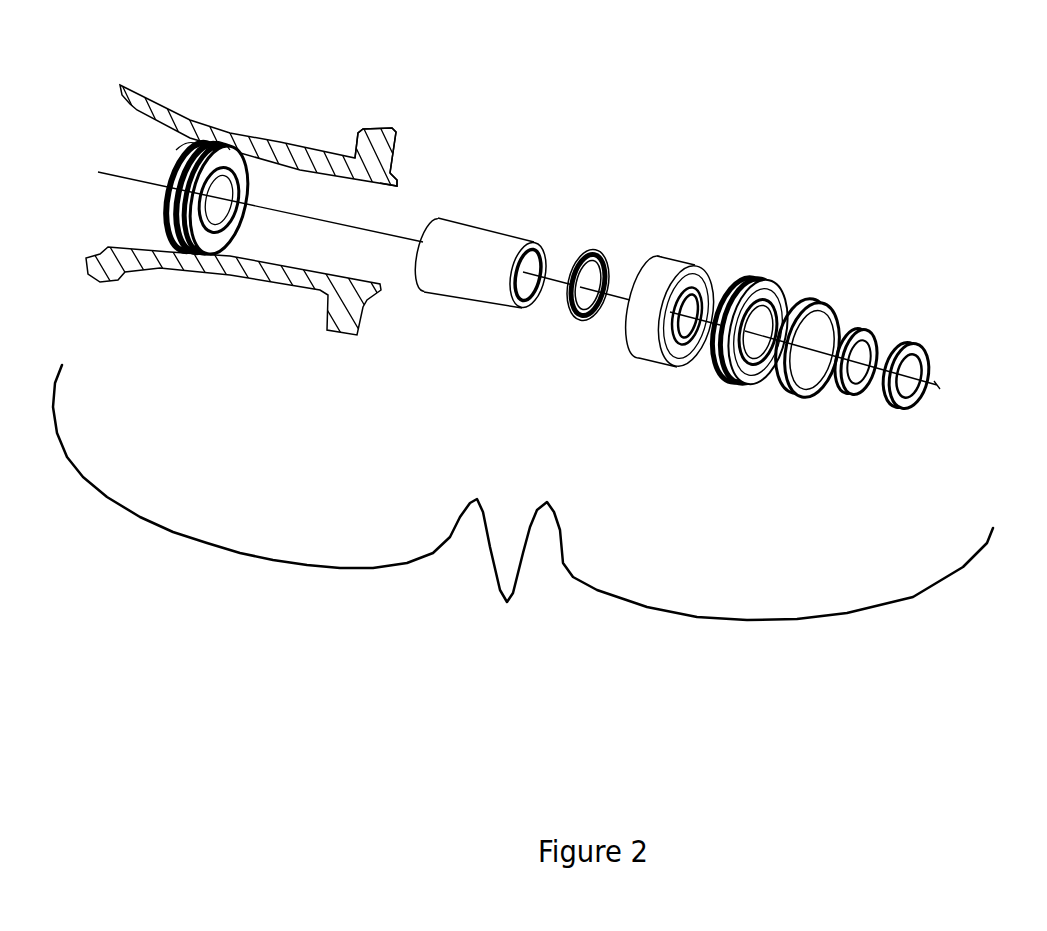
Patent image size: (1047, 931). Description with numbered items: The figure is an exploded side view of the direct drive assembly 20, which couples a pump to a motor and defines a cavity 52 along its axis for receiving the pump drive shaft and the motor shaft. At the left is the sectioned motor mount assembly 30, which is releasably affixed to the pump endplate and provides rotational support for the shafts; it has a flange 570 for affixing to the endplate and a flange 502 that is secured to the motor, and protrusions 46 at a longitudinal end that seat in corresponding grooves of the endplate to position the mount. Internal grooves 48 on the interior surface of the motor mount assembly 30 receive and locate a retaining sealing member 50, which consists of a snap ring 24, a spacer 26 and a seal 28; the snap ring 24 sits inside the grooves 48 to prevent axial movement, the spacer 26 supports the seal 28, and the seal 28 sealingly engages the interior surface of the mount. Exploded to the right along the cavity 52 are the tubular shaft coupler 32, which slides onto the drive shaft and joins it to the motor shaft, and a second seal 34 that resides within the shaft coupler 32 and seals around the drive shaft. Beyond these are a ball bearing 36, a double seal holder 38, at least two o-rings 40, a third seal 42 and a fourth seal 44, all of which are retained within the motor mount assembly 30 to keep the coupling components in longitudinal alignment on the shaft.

The direct drive assembly 20 is at (697, 177).
The snap ring 24 is at (170, 254).
The spacer 26 is at (185, 254).
The seal 28 is at (203, 254).
The motor mount assembly 30 is at (283, 293).
The shaft coupler 32 is at (487, 222).
The second seal 34 is at (597, 254).
The ball bearing 36 is at (653, 365).
The double seal holder 38 is at (728, 386).
The o-rings 40 is at (790, 399).
The third seal 42 is at (848, 398).
The fourth seal 44 is at (897, 409).
The protrusions 46 is at (398, 181).
The internal grooves 48 is at (216, 142).
The retaining sealing member 50 is at (189, 150).
The cavity 52 is at (936, 393).
The flange 502 is at (128, 83).
The flange 570 is at (388, 134).